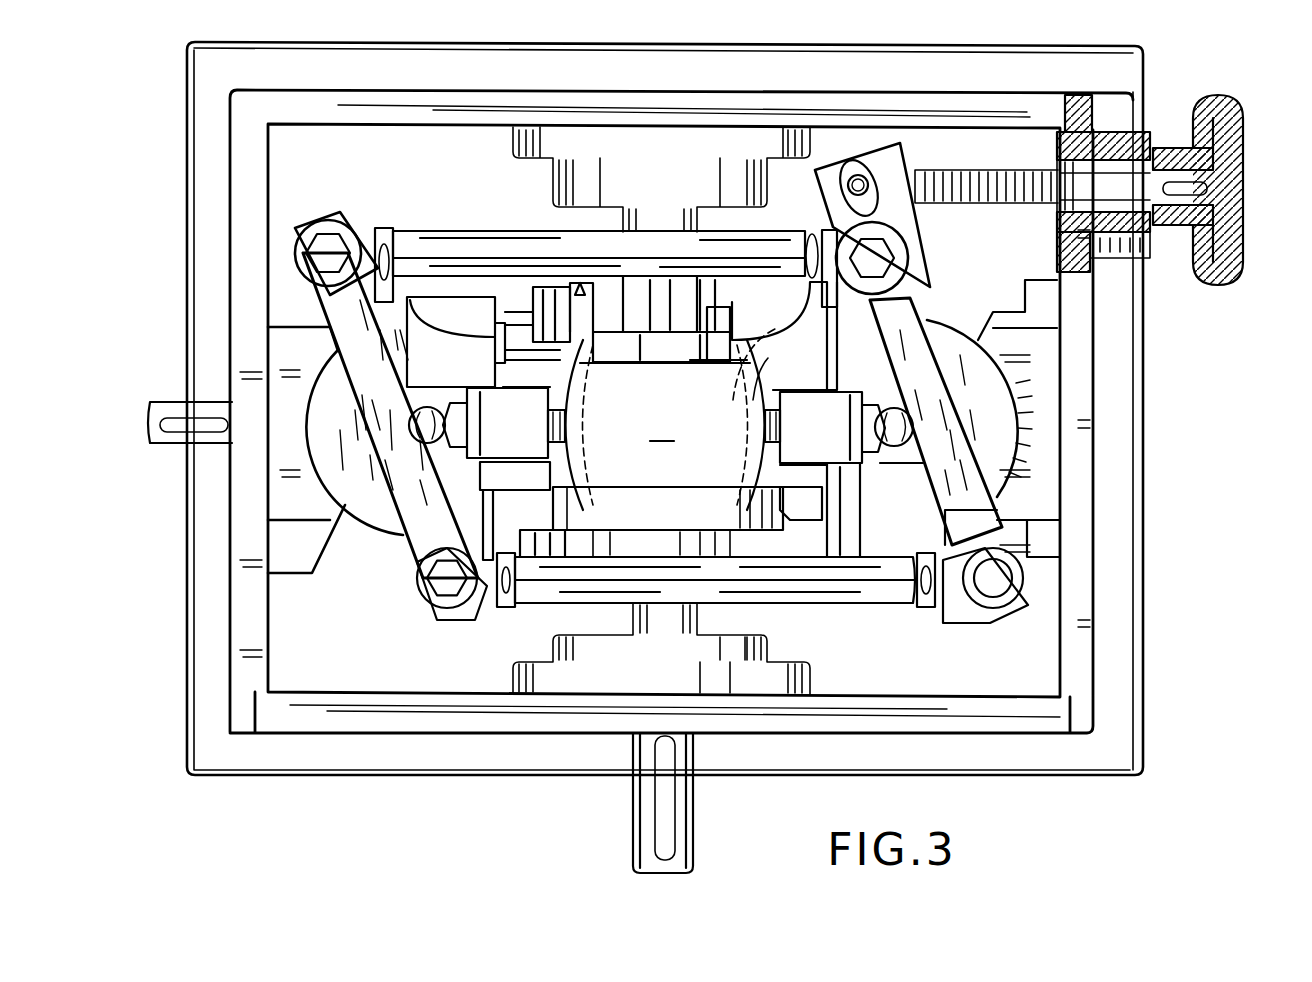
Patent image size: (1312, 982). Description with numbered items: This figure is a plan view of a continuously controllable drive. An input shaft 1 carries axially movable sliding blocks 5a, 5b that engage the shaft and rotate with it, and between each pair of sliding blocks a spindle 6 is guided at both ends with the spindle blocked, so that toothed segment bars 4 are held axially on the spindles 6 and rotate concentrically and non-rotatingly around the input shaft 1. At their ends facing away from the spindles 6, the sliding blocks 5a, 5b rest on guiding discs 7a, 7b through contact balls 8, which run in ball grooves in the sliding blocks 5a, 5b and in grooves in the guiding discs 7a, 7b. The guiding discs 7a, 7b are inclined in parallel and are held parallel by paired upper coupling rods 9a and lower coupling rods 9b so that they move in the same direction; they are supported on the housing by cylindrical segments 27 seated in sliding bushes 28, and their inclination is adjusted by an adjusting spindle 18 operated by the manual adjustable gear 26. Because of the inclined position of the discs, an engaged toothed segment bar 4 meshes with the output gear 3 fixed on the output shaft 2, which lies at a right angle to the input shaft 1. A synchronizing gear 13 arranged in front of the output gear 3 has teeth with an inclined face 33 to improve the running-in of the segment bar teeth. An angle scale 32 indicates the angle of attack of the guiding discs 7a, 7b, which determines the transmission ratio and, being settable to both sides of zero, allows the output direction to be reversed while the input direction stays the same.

The input shaft 1 is at (152, 402).
The output shaft 2 is at (694, 860).
The output gear 3 is at (672, 419).
The toothed segment bars 4 is at (868, 465).
The sliding block 5a is at (913, 515).
The sliding block 5b is at (420, 508).
The spindles 6 is at (803, 520).
The guiding disc 7a is at (913, 337).
The guiding disc 7b is at (353, 350).
The contact balls 8 is at (897, 410).
The upper coupling rods 9a is at (447, 240).
The lower coupling rods 9b is at (767, 600).
The synchronizing gear 13 is at (565, 535).
The adjusting spindle 18 is at (1007, 177).
The manual adjustable gear 26 is at (1238, 112).
The cylindrical segments 27 is at (323, 393).
The sliding bushes 28 is at (330, 490).
The angle scale 32 is at (1023, 467).
The inclined face 33 is at (553, 517).